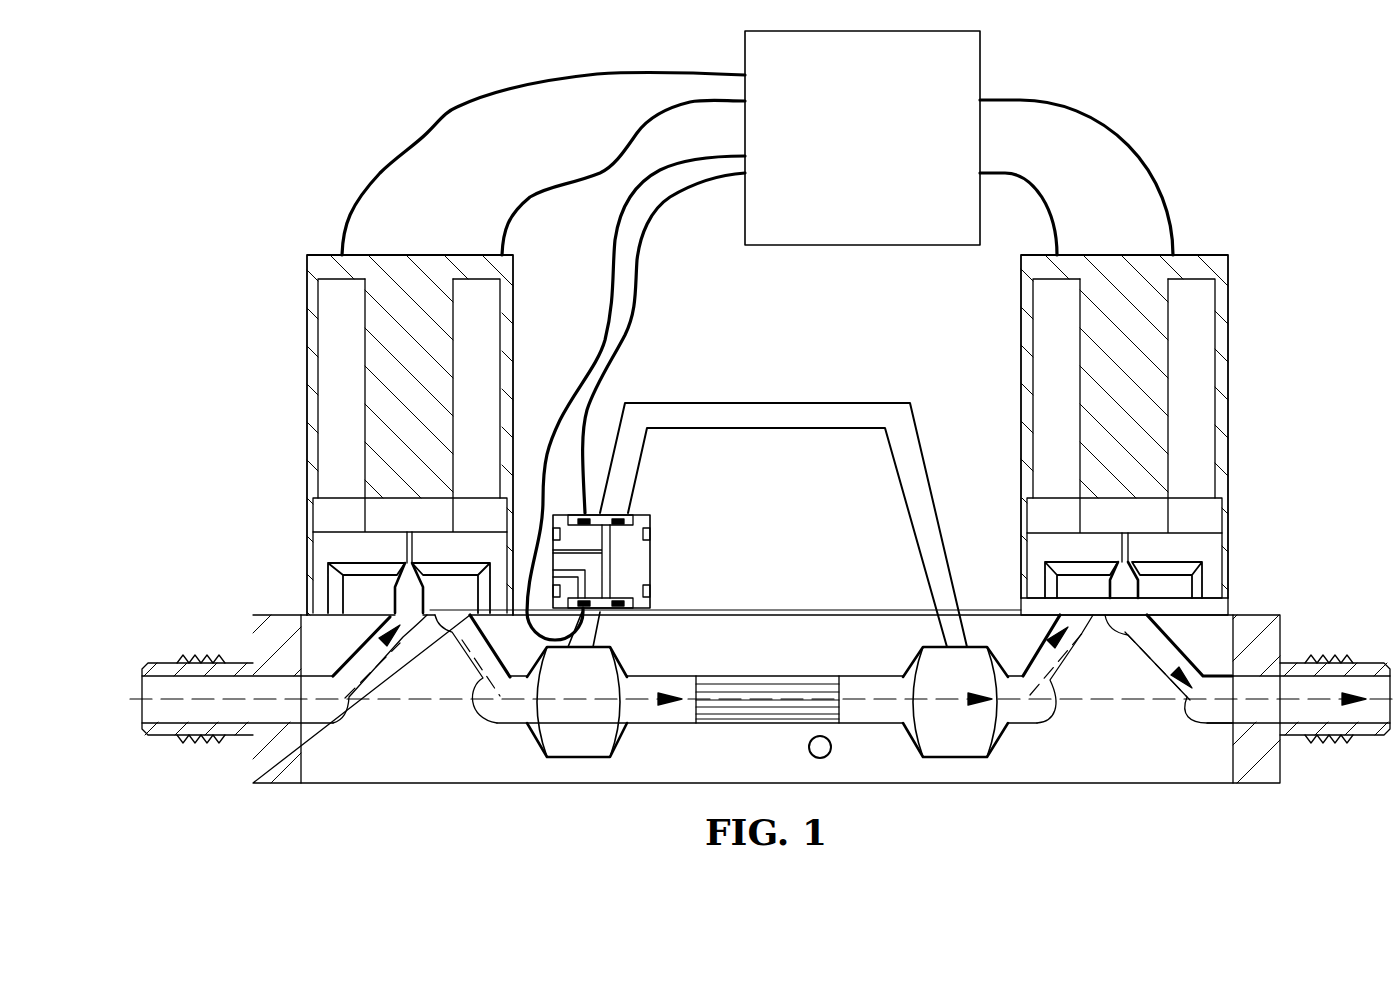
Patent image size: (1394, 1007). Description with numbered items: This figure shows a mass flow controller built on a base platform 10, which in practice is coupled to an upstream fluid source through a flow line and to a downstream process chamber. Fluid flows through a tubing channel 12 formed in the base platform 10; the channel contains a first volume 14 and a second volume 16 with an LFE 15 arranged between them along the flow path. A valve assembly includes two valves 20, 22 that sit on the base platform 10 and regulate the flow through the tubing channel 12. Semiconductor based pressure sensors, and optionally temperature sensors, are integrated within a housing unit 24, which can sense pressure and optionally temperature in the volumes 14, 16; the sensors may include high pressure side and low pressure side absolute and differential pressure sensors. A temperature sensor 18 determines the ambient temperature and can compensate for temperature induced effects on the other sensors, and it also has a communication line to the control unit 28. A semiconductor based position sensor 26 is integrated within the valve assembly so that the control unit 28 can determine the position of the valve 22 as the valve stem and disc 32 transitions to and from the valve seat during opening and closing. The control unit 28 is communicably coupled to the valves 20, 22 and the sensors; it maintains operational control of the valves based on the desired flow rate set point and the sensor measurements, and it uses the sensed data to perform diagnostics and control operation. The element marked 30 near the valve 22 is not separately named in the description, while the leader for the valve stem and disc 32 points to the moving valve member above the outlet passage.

The base platform 10 is at (1273, 758).
The tubing channel 12 is at (1197, 722).
The volume 14 is at (620, 657).
The LFE 15 is at (767, 676).
The volume 16 is at (920, 660).
The temperature sensor 18 is at (832, 747).
The valve 20 is at (310, 367).
The valve 22 is at (1228, 372).
The housing unit 24 is at (652, 563).
The position sensor 26 is at (1220, 607).
The control unit 28 is at (846, 172).
The plunger 30 is at (1110, 587).
The valve stem and disc 32 is at (1133, 577).